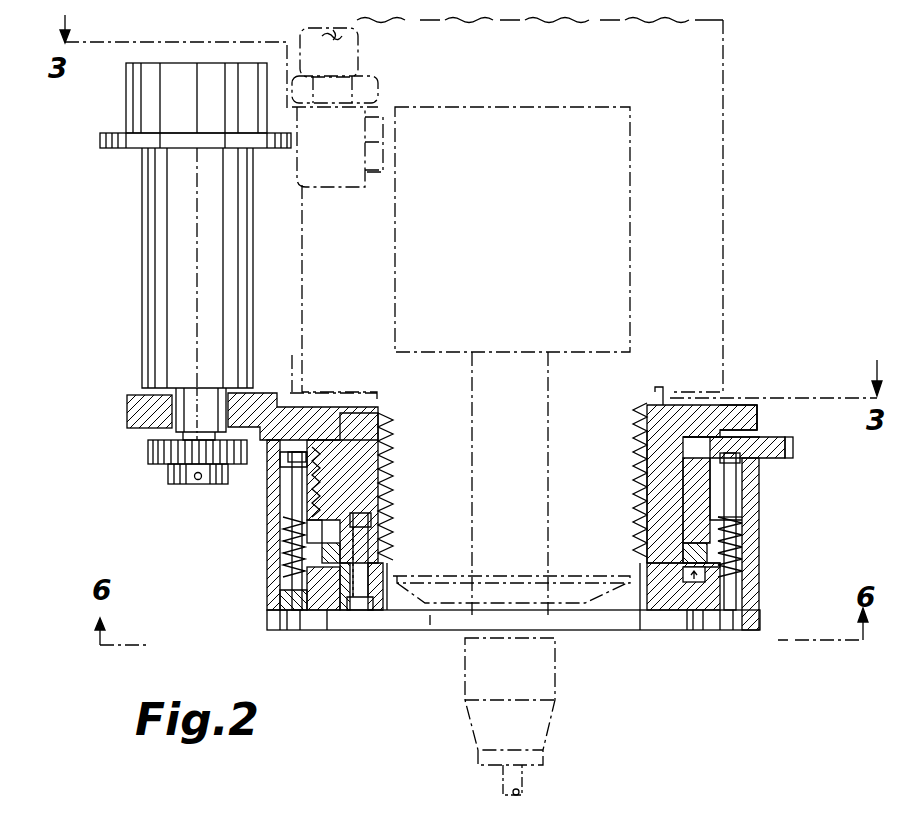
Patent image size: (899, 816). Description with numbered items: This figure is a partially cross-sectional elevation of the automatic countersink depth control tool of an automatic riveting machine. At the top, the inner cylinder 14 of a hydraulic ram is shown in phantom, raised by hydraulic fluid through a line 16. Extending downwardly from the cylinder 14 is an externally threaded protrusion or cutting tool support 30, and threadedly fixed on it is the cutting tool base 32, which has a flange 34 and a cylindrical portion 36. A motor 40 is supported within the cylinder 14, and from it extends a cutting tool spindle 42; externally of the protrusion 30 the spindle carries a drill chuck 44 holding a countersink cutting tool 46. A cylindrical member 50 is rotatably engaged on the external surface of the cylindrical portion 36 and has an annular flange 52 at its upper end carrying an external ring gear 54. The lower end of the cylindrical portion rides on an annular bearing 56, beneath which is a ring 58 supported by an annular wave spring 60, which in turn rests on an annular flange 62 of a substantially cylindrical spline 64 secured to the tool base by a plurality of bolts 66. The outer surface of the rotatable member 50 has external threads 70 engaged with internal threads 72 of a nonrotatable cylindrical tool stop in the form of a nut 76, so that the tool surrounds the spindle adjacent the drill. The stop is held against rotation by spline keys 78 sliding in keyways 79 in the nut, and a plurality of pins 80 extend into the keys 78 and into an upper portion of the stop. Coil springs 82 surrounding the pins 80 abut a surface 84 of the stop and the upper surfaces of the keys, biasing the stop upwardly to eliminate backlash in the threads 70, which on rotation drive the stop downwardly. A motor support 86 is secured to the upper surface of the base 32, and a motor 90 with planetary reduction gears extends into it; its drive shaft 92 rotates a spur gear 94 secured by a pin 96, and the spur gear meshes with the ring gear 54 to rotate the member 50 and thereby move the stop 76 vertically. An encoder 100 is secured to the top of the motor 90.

The inner cylinder 14 is at (723, 183).
The line 16 is at (357, 62).
The cutting tool support 30 is at (600, 521).
The cutting tool base 32 is at (770, 416).
The flange 34 is at (730, 405).
The cylindrical portion 36 is at (638, 478).
The motor 40 is at (630, 306).
The cutting tool spindle 42 is at (527, 406).
The drill chuck 44 is at (555, 685).
The cutting tool 46 is at (525, 788).
The cylindrical member 50 is at (330, 492).
The annular flange 52 is at (282, 437).
The external ring gear 54 is at (242, 463).
The annular bearing 56 is at (745, 563).
The ring 58 is at (370, 556).
The annular wave spring 60 is at (338, 612).
The annular flange 62 is at (352, 614).
The cylindrical spline 64 is at (665, 622).
The bolts 66 is at (350, 612).
The external threads 70 is at (736, 533).
The internal threads 72 is at (733, 516).
The nut 76 is at (272, 628).
The spline keys 78 is at (286, 595).
The keyways 79 is at (291, 612).
The pins 80 is at (298, 612).
The coil springs 82 is at (288, 572).
The surface 84 is at (362, 520).
The motor support 86 is at (127, 398).
The motor 90 is at (213, 264).
The drive shaft 92 is at (180, 436).
The spur gear 94 is at (150, 462).
The pin 96 is at (199, 481).
The encoder 100 is at (212, 112).